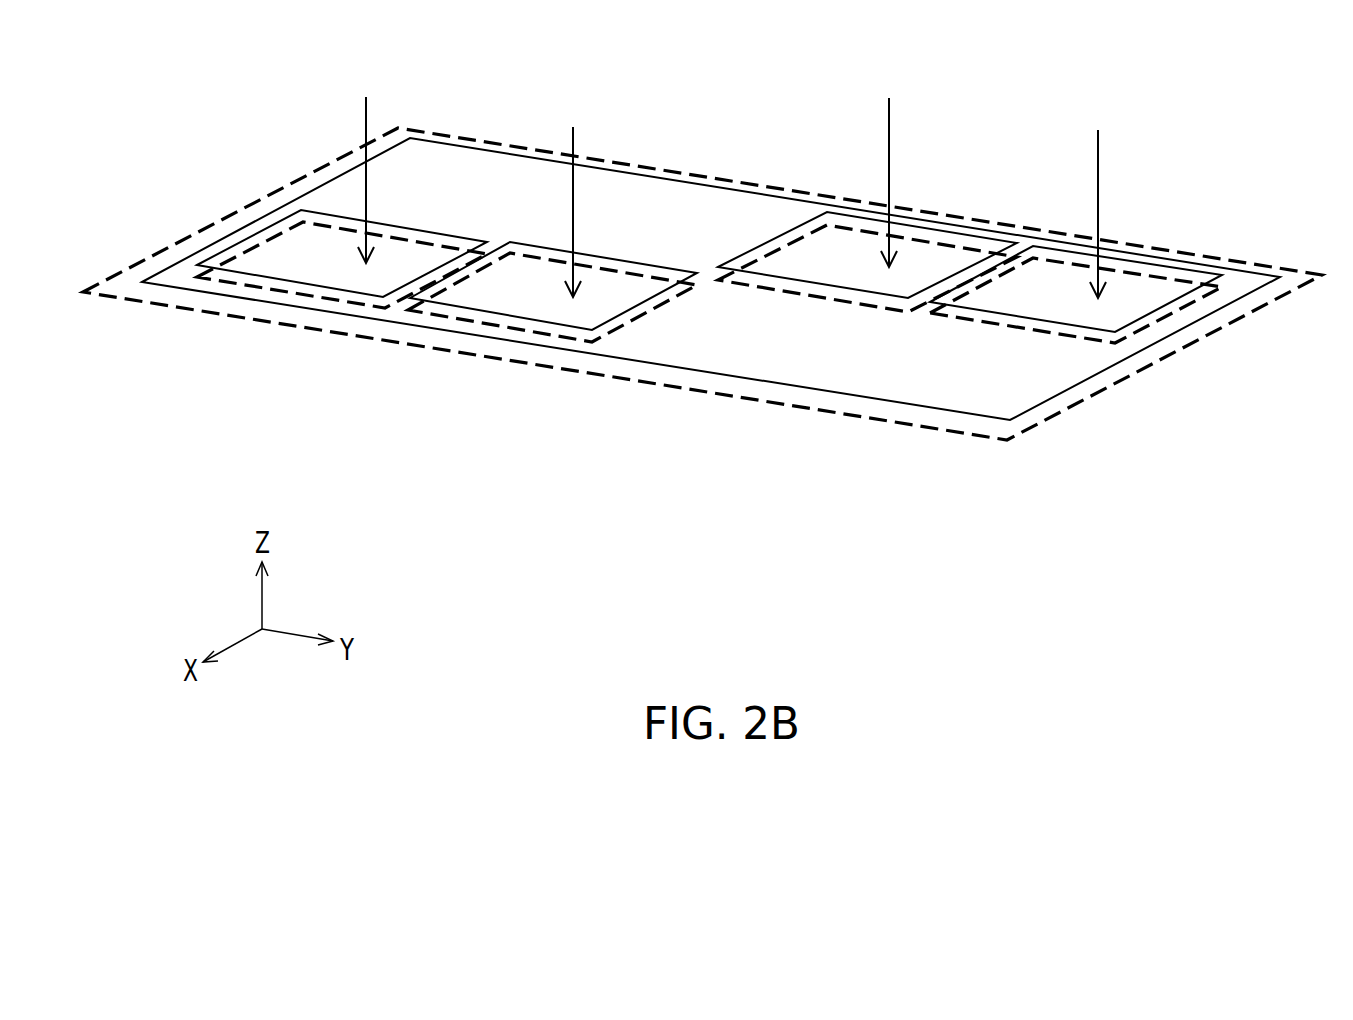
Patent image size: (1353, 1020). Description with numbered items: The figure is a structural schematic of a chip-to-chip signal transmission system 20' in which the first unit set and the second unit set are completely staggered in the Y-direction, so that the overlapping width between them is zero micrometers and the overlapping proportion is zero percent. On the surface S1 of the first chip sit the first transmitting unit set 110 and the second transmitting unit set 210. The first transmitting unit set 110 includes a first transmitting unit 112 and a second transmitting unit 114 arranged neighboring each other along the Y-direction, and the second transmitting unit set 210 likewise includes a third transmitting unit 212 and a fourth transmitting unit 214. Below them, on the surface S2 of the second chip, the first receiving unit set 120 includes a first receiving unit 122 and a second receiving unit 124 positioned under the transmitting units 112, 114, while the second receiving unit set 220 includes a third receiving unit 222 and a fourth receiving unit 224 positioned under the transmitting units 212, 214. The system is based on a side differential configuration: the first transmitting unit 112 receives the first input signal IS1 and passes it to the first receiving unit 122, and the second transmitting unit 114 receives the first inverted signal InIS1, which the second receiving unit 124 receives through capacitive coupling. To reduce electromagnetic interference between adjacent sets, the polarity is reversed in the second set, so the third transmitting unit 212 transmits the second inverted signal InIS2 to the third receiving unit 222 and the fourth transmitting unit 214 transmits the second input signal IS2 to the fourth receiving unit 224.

The chip-to-chip signal transmission system 20' is at (702, 344).
The first transmitting unit set 110 is at (458, 220).
The first transmitting unit 112 is at (292, 238).
The second transmitting unit 114 is at (613, 270).
The first receiving unit set 120 is at (427, 307).
The first receiving unit 122 is at (295, 290).
The second receiving unit 124 is at (482, 320).
The second transmitting unit set 210 is at (988, 236).
The third transmitting unit 212 is at (933, 240).
The fourth transmitting unit 214 is at (1157, 275).
The second receiving unit set 220 is at (939, 360).
The third receiving unit 222 is at (837, 293).
The fourth receiving unit 224 is at (1003, 320).
The surface S1 is at (1133, 342).
The surface S2 is at (1088, 385).
The first input signal IS1 is at (366, 164).
The first inverted signal InIS1 is at (572, 196).
The second inverted signal InIS2 is at (887, 166).
The second input signal IS2 is at (1100, 197).